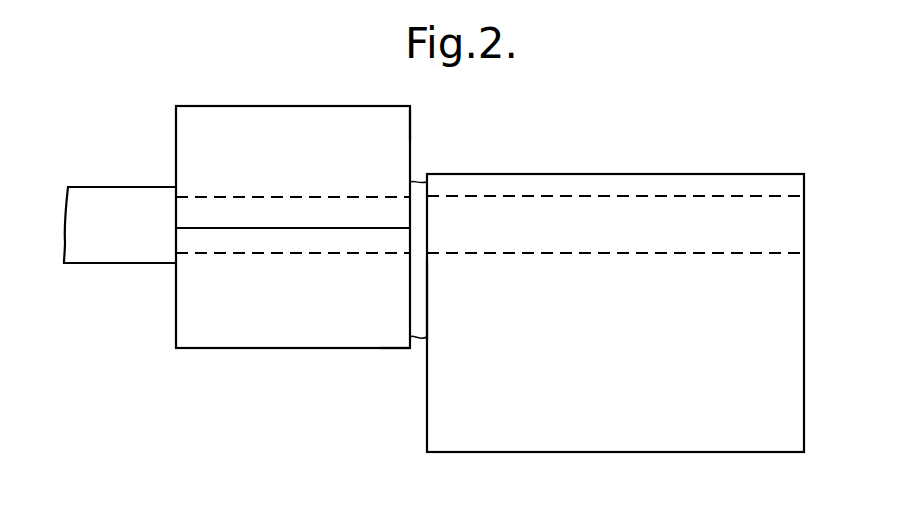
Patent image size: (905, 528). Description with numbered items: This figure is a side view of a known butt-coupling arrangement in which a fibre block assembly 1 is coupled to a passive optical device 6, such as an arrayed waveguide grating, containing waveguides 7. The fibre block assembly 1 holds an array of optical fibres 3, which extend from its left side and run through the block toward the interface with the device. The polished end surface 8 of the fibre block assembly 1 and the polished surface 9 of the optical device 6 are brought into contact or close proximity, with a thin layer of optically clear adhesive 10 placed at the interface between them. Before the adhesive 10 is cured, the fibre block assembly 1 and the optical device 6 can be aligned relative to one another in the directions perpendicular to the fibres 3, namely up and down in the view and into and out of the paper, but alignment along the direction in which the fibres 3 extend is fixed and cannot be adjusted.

The fibre block assembly 1 is at (299, 123).
The optical fibres 3 is at (117, 237).
The passive optical device 6 is at (785, 371).
The waveguides 7 is at (618, 196).
The polished end surface 8 is at (410, 127).
The polished surface 9 is at (427, 288).
The optically clear adhesive 10 is at (411, 305).